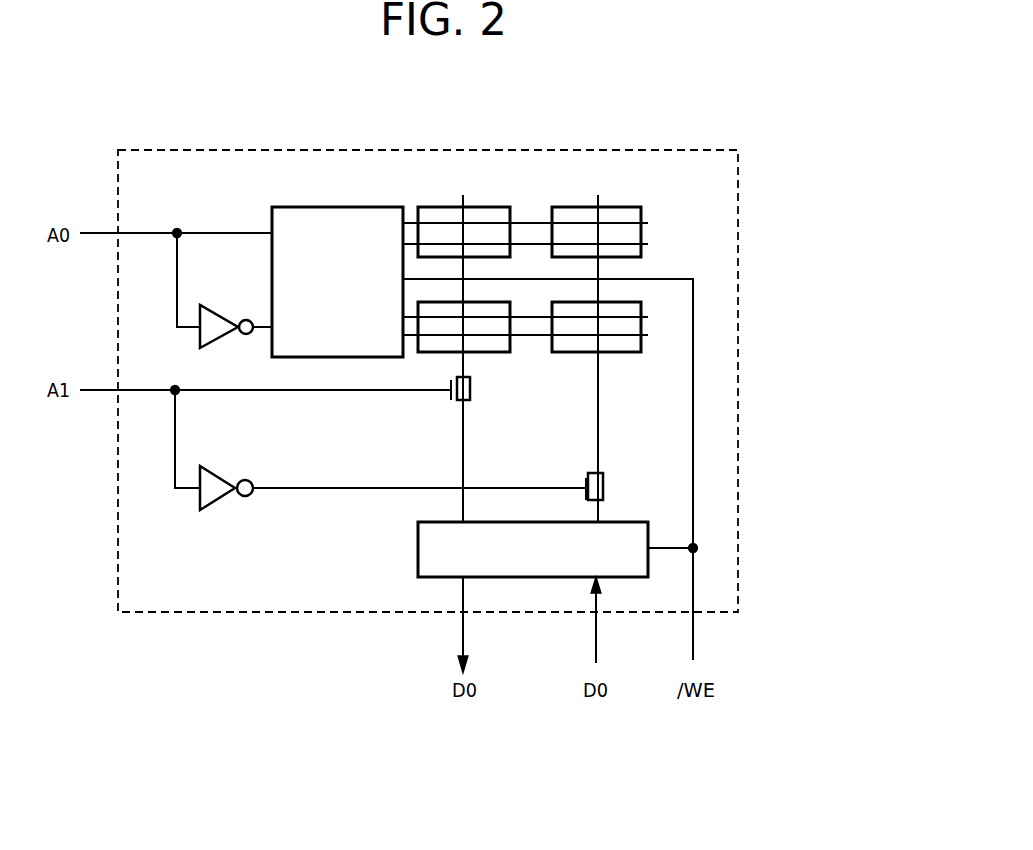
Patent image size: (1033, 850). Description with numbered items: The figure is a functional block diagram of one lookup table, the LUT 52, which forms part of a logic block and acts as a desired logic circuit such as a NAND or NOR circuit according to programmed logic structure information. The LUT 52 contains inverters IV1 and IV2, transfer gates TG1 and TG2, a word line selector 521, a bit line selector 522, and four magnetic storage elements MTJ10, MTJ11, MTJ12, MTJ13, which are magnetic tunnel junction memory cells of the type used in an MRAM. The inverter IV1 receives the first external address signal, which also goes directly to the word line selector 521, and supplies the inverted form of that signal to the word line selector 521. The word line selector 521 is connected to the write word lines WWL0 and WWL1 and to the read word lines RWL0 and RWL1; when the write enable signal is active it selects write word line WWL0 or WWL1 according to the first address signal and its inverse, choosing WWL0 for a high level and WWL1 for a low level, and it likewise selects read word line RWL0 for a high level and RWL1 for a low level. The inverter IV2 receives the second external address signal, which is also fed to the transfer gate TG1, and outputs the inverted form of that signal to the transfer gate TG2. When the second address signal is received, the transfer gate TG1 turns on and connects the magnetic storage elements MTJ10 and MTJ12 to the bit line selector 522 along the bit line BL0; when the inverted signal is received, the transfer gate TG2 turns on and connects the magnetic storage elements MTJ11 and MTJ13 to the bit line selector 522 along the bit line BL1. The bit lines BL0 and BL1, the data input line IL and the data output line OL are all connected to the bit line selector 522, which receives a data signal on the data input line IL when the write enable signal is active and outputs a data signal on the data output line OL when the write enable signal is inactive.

The lookup table (LUT) 52 is at (271, 150).
The word line selector 521 is at (333, 207).
The bit line selector 522 is at (418, 552).
The inverter IV1 is at (237, 298).
The inverter IV2 is at (217, 470).
The magnetic storage element MTJ10 is at (482, 205).
The magnetic storage element MTJ11 is at (648, 188).
The magnetic storage element MTJ12 is at (487, 352).
The magnetic storage element MTJ13 is at (613, 352).
The write word line WWL0 is at (655, 222).
The read word line RWL0 is at (655, 242).
The write word line WWL1 is at (655, 313).
The read word line RWL1 is at (655, 332).
The bit line BL0 is at (465, 192).
The bit line BL1 is at (598, 192).
The transfer gate TG1 is at (470, 388).
The transfer gate TG2 is at (604, 488).
The data output line OL is at (463, 638).
The data input line IL is at (596, 640).